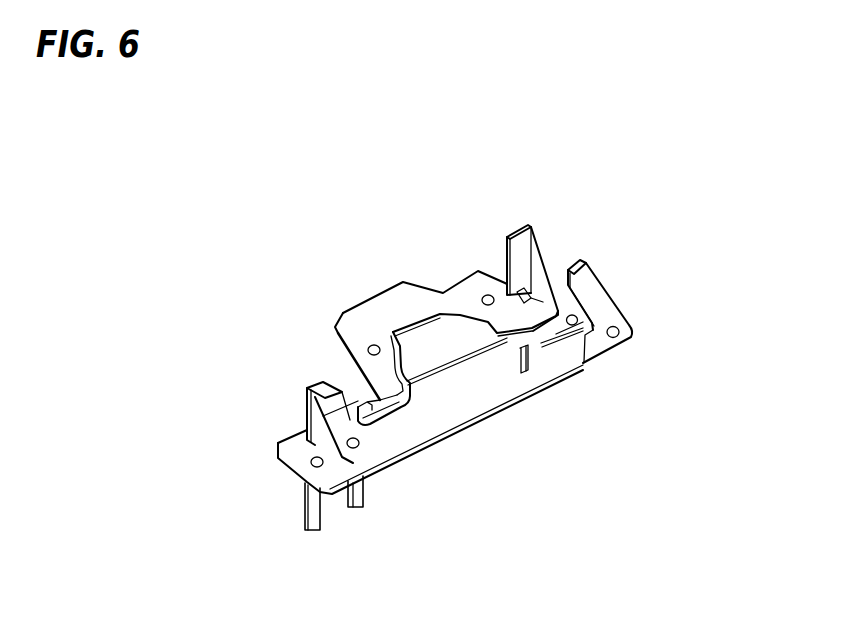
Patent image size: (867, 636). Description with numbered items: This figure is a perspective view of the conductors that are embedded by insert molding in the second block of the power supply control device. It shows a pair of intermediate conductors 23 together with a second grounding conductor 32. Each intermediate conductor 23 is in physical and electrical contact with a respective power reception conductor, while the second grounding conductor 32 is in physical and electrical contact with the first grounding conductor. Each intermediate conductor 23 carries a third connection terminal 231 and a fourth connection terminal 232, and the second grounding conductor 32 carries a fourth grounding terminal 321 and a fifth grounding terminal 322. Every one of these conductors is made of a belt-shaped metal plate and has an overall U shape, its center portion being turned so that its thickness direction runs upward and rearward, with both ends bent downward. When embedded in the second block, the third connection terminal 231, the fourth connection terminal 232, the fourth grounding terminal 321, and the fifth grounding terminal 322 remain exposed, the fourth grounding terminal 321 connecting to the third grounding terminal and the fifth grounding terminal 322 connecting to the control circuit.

The intermediate conductor 23 is at (368, 312).
The third connection terminal 231 is at (360, 498).
The fourth connection terminal 232 is at (573, 343).
The second grounding conductor 32 is at (540, 255).
The fourth grounding terminal 321 is at (312, 383).
The fifth grounding terminal 322 is at (518, 268).